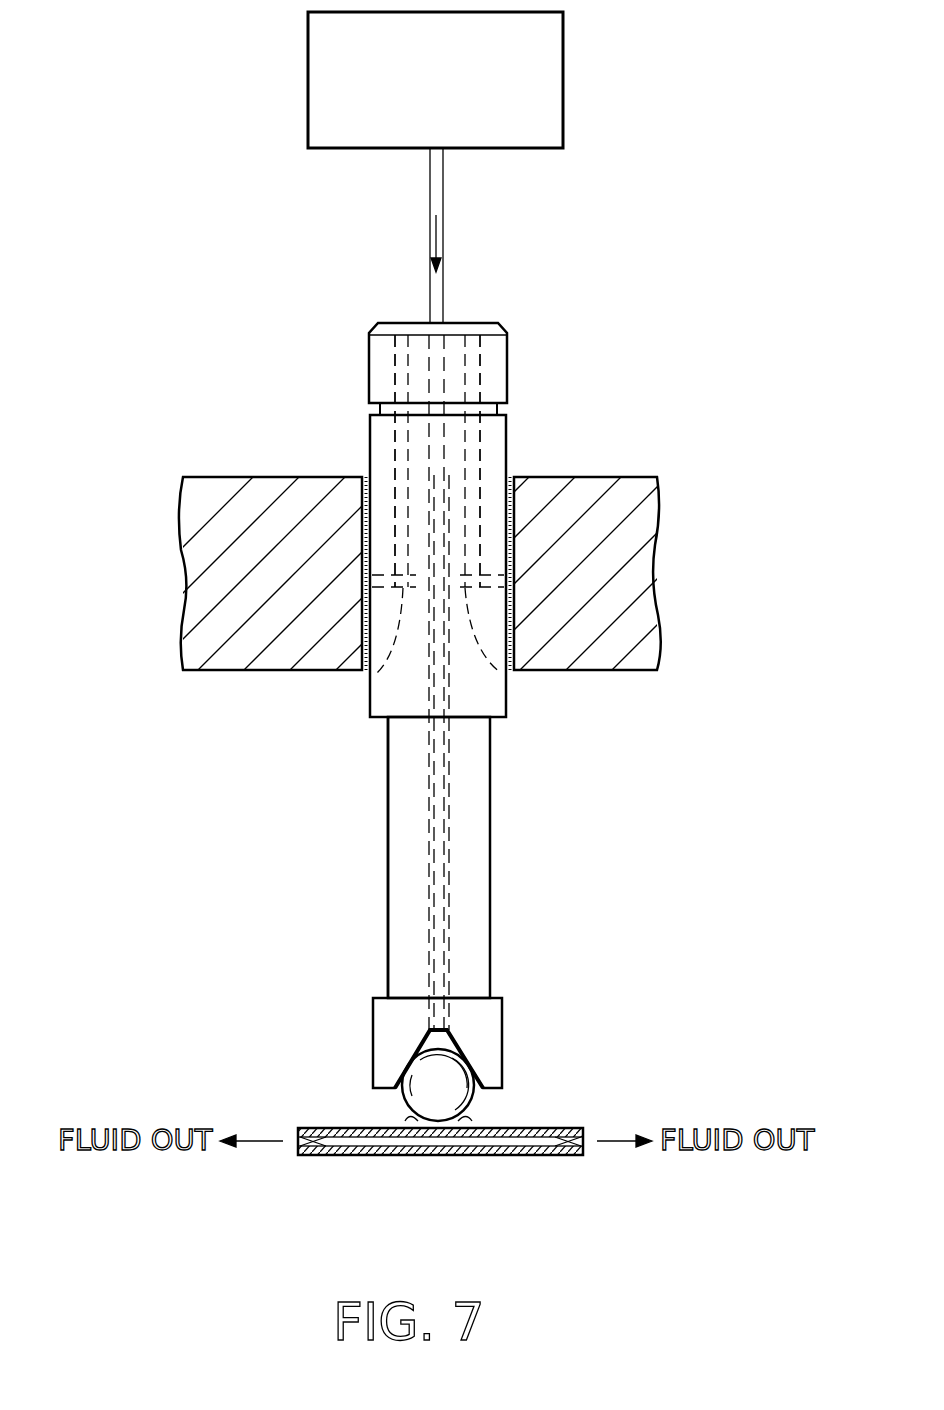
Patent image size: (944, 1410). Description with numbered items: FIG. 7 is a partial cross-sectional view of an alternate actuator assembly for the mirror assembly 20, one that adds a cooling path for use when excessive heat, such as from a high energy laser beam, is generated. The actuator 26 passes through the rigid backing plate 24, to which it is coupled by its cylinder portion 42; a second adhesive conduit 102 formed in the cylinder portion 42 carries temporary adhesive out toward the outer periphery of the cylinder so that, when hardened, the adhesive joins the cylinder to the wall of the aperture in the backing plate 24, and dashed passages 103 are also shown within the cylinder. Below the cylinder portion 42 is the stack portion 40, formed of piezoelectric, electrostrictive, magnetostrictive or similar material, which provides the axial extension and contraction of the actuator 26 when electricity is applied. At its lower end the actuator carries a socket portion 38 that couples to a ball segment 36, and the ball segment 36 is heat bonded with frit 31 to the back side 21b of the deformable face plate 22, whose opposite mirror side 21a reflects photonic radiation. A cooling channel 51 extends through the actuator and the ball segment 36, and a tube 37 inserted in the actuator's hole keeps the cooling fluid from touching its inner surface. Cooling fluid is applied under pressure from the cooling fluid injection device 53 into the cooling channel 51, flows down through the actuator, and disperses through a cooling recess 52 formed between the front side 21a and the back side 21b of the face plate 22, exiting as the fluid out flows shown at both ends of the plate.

The cooling fluid injection device 53 is at (563, 55).
The mirror assembly 20 is at (266, 820).
The cylinder portion 42 is at (370, 712).
The second adhesive conduit 102 is at (393, 437).
The curved fluid passages 103 is at (368, 682).
The tube 37 is at (446, 890).
The cooling channel 51 is at (430, 910).
The rigid backing plate 24 is at (178, 585).
The actuator 26 is at (385, 772).
The stack portion 40 is at (393, 880).
The socket portion 38 is at (502, 1012).
The ball segment 36 is at (473, 1118).
The frit 31 is at (472, 1127).
The deformable face plate 22 is at (298, 1133).
The back side 21b is at (440, 1100).
The mirror side 21a is at (505, 1157).
The cooling recess 52 is at (310, 1157).